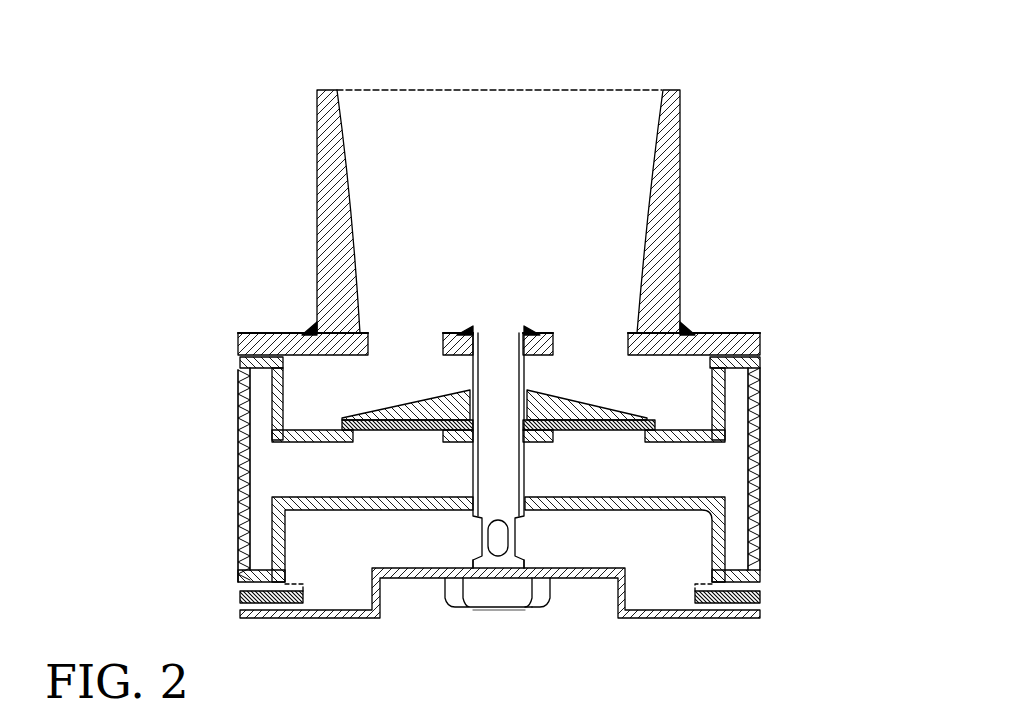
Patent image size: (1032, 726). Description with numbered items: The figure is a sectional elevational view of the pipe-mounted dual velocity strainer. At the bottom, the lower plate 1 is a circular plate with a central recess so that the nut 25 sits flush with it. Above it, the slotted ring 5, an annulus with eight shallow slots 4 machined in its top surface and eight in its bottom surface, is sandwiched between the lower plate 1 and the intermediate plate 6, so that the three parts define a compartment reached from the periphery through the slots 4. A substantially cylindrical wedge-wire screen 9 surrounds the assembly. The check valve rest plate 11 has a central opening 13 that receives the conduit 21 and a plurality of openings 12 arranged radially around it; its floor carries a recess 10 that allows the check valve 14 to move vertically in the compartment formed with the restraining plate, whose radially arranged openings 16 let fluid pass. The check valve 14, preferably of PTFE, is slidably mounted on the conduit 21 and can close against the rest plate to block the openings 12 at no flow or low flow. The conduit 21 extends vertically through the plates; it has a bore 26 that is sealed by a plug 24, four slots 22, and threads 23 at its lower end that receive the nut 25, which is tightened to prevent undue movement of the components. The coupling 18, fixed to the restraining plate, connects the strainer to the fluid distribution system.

The lower plate 1 is at (743, 620).
The slots 4 is at (760, 607).
The slotted ring 5 is at (743, 333).
The intermediate plate 6 is at (556, 586).
The screen 9 is at (762, 383).
The recess 10 is at (726, 428).
The check valve rest plate 11 is at (562, 422).
The openings 12 is at (373, 442).
The central opening 13 is at (470, 442).
The check valve 14 is at (398, 408).
The openings 16 is at (461, 183).
The coupling 18 is at (317, 170).
The conduit 21 is at (633, 301).
The slots 22 is at (482, 540).
The threads 23 is at (471, 607).
The plug 24 is at (485, 575).
The nut 25 is at (553, 600).
The bore 26 is at (498, 333).